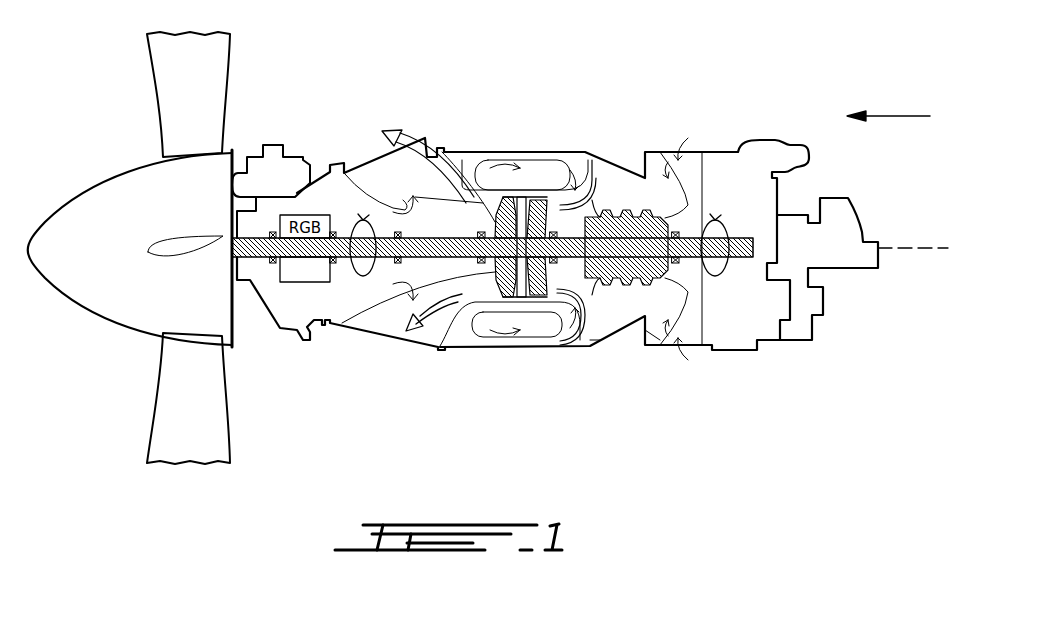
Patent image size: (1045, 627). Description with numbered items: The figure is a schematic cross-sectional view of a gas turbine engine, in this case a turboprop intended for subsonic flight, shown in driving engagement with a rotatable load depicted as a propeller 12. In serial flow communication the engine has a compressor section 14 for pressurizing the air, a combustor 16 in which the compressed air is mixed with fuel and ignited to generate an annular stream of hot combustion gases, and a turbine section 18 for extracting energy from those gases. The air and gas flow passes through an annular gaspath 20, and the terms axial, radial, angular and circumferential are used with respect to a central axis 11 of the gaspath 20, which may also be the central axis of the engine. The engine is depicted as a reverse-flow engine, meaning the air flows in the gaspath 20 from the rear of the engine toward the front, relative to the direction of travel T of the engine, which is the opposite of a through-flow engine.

The central axis 11 is at (911, 252).
The propeller 12 is at (207, 53).
The compressor section 14 is at (628, 197).
The combustor 16 is at (538, 328).
The turbine section 18 is at (485, 271).
The annular gaspath 20 is at (590, 330).
The direction of travel T is at (897, 118).